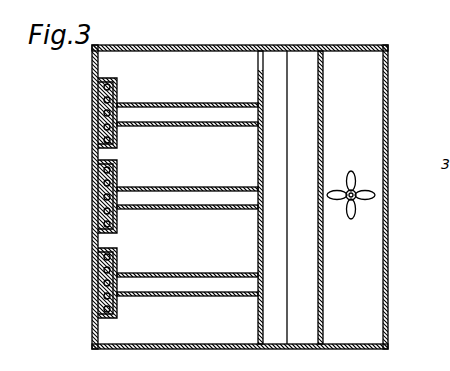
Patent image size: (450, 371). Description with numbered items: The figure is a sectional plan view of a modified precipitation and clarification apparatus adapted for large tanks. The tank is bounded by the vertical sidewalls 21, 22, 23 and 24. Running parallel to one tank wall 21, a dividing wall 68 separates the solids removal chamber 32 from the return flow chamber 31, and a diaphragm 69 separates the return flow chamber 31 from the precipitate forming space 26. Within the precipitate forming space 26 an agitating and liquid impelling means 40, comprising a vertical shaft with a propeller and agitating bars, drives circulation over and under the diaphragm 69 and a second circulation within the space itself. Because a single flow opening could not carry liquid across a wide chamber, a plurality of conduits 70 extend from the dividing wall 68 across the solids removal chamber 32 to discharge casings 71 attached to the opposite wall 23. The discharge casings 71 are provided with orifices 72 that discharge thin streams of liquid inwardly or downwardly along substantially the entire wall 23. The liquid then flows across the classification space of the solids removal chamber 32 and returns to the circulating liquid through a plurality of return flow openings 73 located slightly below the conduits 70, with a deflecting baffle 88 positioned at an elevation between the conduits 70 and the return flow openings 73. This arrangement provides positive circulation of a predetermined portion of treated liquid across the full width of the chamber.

The sidewall 21 is at (225, 185).
The sidewall 22 is at (148, 350).
The sidewall 23 is at (92, 326).
The sidewall 24 is at (228, 52).
The precipitate forming space 26 is at (380, 72).
The return flow chamber 31 is at (302, 60).
The solids removal chamber 32 is at (161, 57).
The agitating and liquid impelling means 40 is at (368, 182).
The dividing wall 68 is at (264, 72).
The diaphragm 69 is at (324, 75).
The conduits 70 is at (167, 108).
The discharge casing 71 is at (106, 115).
The orifices 72 is at (104, 198).
The return flow openings 73 is at (258, 157).
The deflecting baffle 88 is at (288, 251).